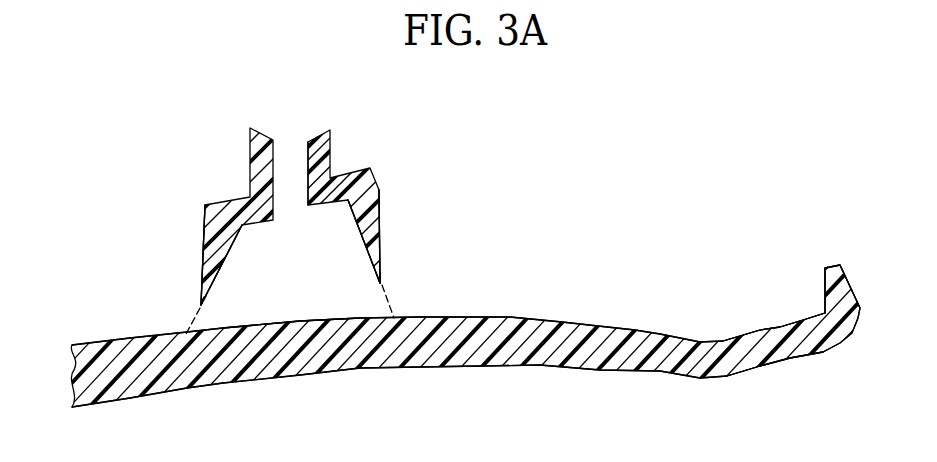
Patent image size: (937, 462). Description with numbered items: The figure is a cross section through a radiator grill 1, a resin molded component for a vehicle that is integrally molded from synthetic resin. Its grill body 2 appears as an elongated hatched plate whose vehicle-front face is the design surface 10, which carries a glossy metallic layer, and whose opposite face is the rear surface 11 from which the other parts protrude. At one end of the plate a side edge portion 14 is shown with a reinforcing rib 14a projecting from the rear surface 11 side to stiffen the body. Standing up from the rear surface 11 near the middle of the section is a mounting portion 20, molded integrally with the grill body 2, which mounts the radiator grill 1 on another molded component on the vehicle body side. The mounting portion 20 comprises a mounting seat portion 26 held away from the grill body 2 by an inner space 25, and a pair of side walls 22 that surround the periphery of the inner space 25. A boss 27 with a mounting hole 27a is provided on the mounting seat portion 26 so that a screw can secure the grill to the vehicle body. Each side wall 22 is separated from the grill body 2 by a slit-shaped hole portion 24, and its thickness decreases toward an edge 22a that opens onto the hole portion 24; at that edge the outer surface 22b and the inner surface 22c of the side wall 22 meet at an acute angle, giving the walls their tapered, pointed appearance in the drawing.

The radiator grill 1 is at (623, 188).
The grill body 2 is at (478, 314).
The design surface 10 is at (548, 368).
The rear surface 11 is at (557, 321).
The side edge portion 14 is at (848, 332).
The reinforcing rib 14a is at (829, 280).
The mounting portion 20 is at (388, 162).
The side wall 22 is at (205, 215).
The edge 22a is at (201, 300).
The outer surface 22b is at (203, 253).
The inner surface 22c is at (222, 263).
The hole portion 24 is at (188, 312).
The inner space 25 is at (310, 308).
The mounting seat portion 26 is at (232, 203).
The boss 27 is at (330, 141).
The mounting hole 27a is at (308, 152).